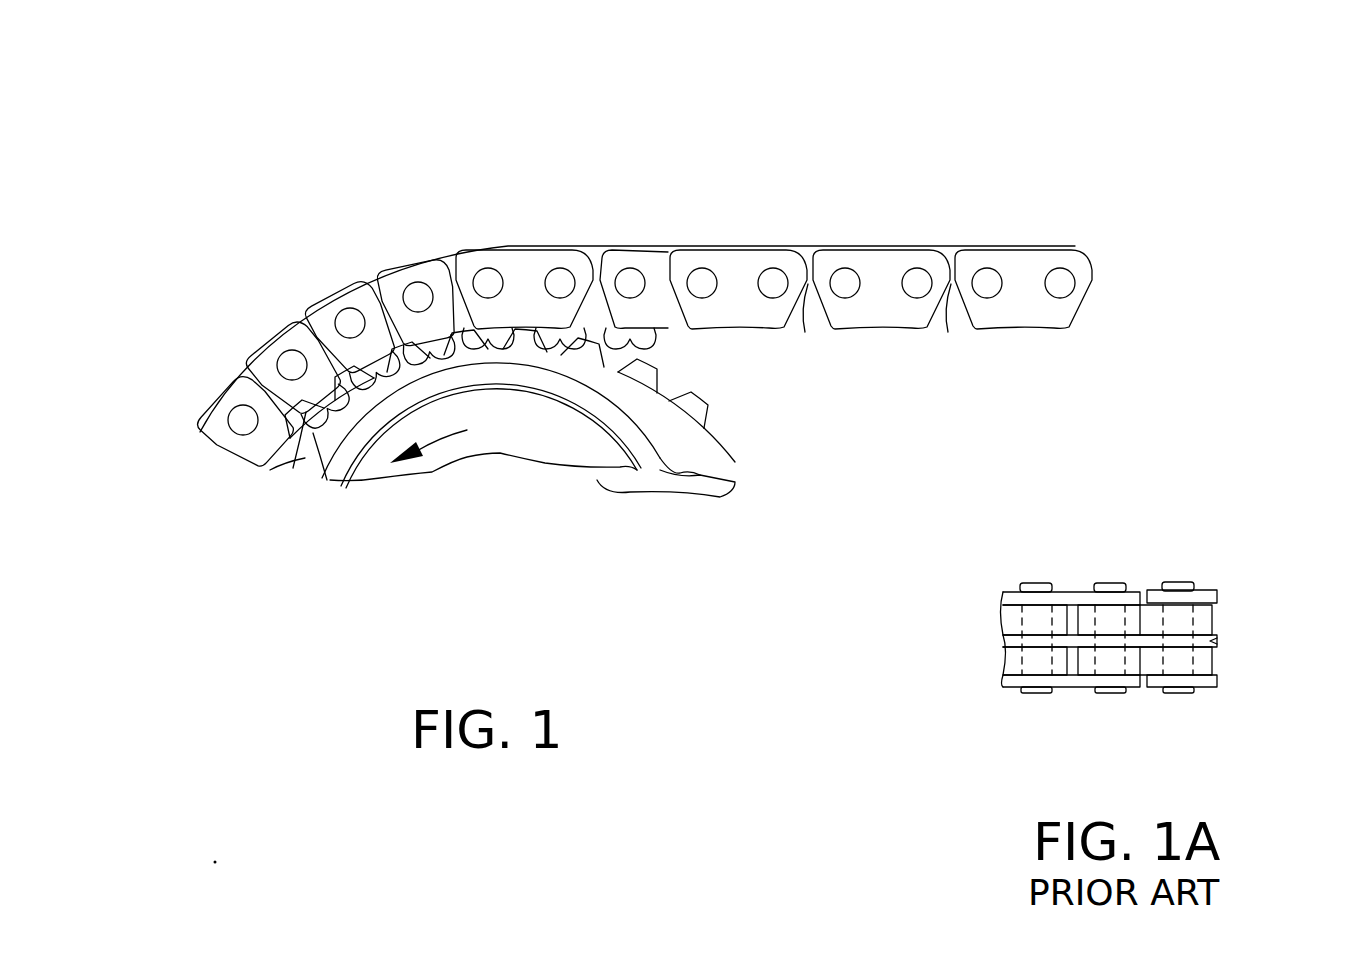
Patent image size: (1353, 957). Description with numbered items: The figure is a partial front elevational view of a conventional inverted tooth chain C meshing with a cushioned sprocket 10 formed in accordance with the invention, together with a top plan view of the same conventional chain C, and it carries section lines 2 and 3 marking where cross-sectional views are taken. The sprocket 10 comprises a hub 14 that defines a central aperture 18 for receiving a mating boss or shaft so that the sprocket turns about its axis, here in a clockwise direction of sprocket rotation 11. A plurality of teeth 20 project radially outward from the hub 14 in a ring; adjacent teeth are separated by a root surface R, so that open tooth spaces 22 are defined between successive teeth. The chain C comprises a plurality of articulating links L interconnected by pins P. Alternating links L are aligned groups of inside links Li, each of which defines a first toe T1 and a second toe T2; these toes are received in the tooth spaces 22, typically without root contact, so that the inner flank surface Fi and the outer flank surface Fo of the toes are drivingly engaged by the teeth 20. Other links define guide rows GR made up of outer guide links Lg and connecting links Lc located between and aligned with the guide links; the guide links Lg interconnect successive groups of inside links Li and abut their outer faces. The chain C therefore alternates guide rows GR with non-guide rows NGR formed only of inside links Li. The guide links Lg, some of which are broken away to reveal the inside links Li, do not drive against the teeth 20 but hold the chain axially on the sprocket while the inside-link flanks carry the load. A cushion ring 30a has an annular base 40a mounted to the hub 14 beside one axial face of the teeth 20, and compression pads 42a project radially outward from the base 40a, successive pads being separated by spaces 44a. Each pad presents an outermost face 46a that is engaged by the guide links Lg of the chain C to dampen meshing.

In FIG. 1, the section line 2- 2 is at (487, 165).
In FIG. 1, the section line 3- 3 is at (385, 198).
In FIG. 1, the sprocket 10 is at (647, 367).
In FIG. 1, the direction of sprocket rotation 11 is at (443, 433).
In FIG. 1, the hub 14 is at (566, 426).
In FIG. 1, the central aperture 18 is at (705, 494).
In FIG. 1, the teeth 20 is at (450, 255).
In FIG. 1, the tooth spaces 22 is at (494, 337).
In FIG. 1, the cushion ring 30a is at (307, 470).
In FIG. 1, the annular base 40a is at (323, 437).
In FIG. 1, the compression pads 42a is at (345, 308).
In FIG. 1, the spaces 44a is at (293, 468).
In FIG. 1, the outermost face 46a is at (396, 262).
In FIG. 1, the guide links Lg is at (316, 318).
In FIG. 1A, the guide links Lg is at (1077, 592).
In FIG. 1, the inside links Li is at (390, 285).
In FIG. 1A, the inside links Li is at (1137, 665).
In FIG. 1, the connecting links Lc is at (455, 262).
In FIG. 1A, the connecting links Lc is at (1067, 635).
In FIG. 1, the links L is at (888, 230).
In FIG. 1A, the links L is at (1090, 575).
In FIG. 1, the pins P is at (643, 272).
In FIG. 1A, the pins P is at (1036, 583).
In FIG. 1, the outer flank surface Fo is at (587, 277).
In FIG. 1, the inner flank surface Fi is at (653, 320).
In FIG. 1, the first toe T1 is at (550, 323).
In FIG. 1, the second toe T2 is at (592, 322).
In FIG. 1, the root surface R is at (657, 402).
In FIG. 1, the non-guide rows NGR is at (807, 230).
In FIG. 1A, the non-guide rows NGR is at (1158, 555).
In FIG. 1, the guide rows GR is at (895, 248).
In FIG. 1A, the guide rows GR is at (1205, 590).
In FIG. 1, the inverted tooth chain C is at (992, 205).
In FIG. 1A, the inverted tooth chain C is at (1149, 616).